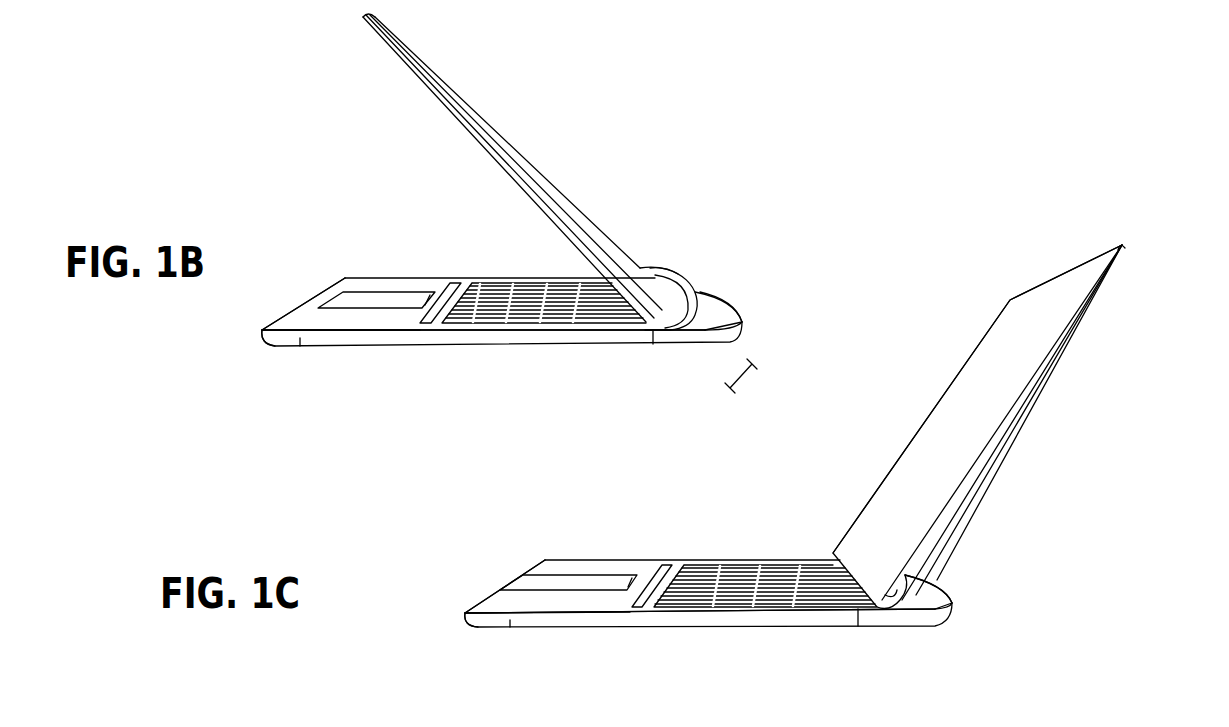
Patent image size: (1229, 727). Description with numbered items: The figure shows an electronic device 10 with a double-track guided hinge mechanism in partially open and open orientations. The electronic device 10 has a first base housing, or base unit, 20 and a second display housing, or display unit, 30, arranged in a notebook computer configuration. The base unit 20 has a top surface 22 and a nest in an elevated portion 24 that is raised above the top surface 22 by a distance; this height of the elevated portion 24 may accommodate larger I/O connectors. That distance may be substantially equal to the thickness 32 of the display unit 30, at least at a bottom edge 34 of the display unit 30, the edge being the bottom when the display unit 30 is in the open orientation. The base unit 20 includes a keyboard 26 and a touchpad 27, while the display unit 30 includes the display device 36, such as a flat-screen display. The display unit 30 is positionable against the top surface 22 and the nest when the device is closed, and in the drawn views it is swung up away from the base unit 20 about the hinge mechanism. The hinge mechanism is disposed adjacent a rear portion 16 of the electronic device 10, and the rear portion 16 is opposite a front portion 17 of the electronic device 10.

In FIG. 1B, the electronic device 10 is at (645, 52).
In FIG. 1C, the electronic device 10 is at (1063, 452).
In FIG. 1B, the rear portion 16 is at (768, 330).
In FIG. 1C, the rear portion 16 is at (968, 612).
In FIG. 1B, the front portion 17 is at (236, 324).
In FIG. 1C, the front portion 17 is at (440, 602).
In FIG. 1B, the base housing 20 is at (392, 278).
In FIG. 1C, the base housing 20 is at (565, 560).
In FIG. 1B, the top surface 22 is at (355, 325).
In FIG. 1C, the top surface 22 is at (492, 607).
In FIG. 1B, the elevated portion 24 is at (718, 320).
In FIG. 1C, the elevated portion 24 is at (918, 602).
In FIG. 1B, the keyboard 26 is at (490, 285).
In FIG. 1C, the keyboard 26 is at (755, 565).
In FIG. 1B, the touchpad 27 is at (350, 300).
In FIG. 1C, the touchpad 27 is at (555, 585).
In FIG. 1B, the display housing 30 is at (573, 196).
In FIG. 1C, the display housing 30 is at (950, 383).
In FIG. 1B, the thickness 32 is at (750, 376).
In FIG. 1B, the bottom edge 34 is at (683, 318).
In FIG. 1C, the bottom edge 34 is at (877, 605).
In FIG. 1C, the display device 36 is at (1015, 330).